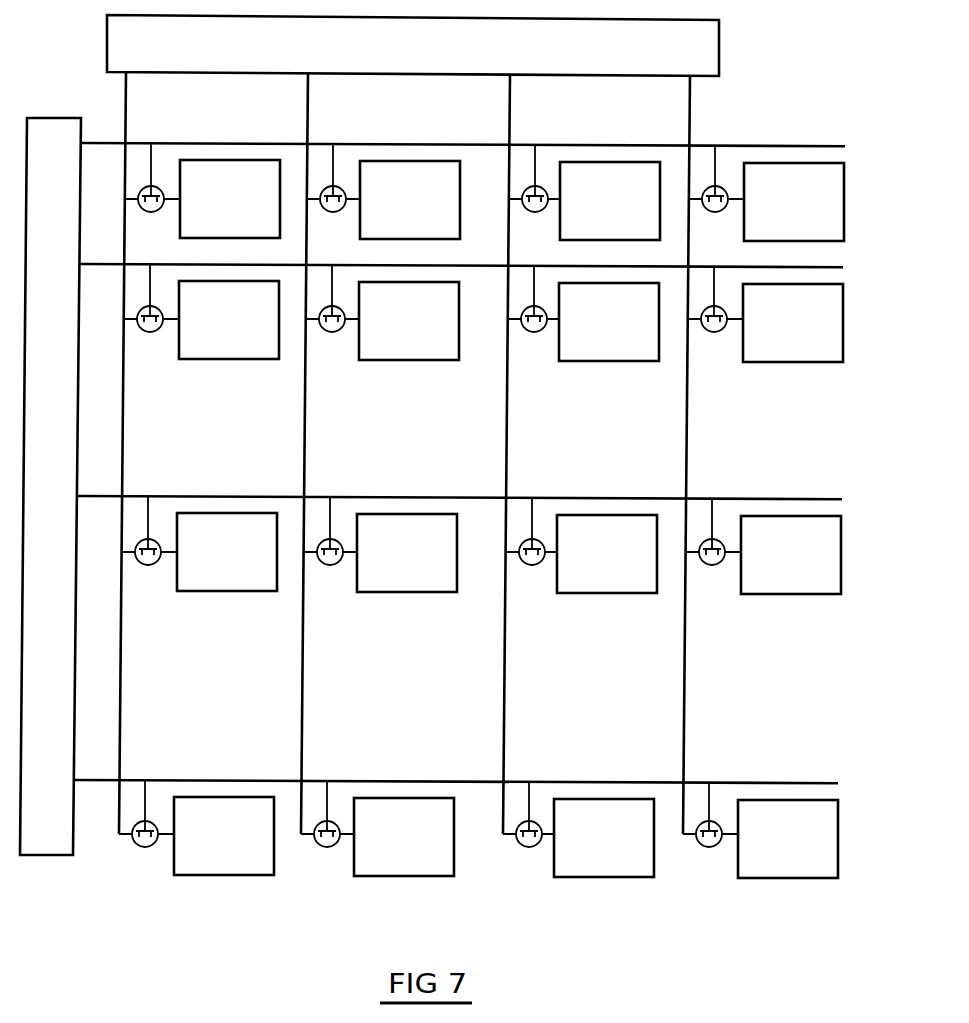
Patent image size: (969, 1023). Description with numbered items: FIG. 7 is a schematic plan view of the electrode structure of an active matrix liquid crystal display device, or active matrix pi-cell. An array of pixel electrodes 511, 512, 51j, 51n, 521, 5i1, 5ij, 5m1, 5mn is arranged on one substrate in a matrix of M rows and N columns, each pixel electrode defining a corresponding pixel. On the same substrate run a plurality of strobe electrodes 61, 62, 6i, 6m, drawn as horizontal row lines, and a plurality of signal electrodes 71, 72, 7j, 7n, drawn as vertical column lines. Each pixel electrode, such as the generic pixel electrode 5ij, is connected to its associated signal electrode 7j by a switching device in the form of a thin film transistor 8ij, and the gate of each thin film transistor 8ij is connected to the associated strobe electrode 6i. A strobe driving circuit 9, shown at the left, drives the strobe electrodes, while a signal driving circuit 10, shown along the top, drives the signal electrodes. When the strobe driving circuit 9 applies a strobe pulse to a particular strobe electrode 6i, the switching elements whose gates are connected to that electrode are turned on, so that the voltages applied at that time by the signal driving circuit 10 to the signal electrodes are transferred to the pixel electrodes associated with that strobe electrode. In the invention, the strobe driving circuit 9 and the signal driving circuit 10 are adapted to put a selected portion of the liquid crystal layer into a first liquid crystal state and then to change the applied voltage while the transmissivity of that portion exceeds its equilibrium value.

The signal driving circuit 10 is at (413, 45).
The strobe driving circuit 9 is at (50, 486).
The pixel electrode 511 is at (202, 190).
The pixel electrode 512 is at (383, 191).
The pixel electrode 51j is at (584, 192).
The pixel electrode 51n is at (766, 193).
The pixel electrode 521 is at (201, 311).
The pixel electrode 5i1 is at (199, 543).
The pixel electrode 5ij is at (581, 545).
The pixel electrode 5m1 is at (196, 827).
The pixel electrode 5mn is at (760, 830).
The strobe electrode 61 is at (793, 146).
The strobe electrode 62 is at (788, 266).
The strobe electrode 6i is at (797, 498).
The strobe electrode 6m is at (799, 778).
The signal electrode 71 is at (120, 688).
The signal electrode 72 is at (302, 688).
The signal electrode 7j is at (503, 688).
The signal electrode 7n is at (685, 687).
The thin film transistor 8ij is at (329, 567).